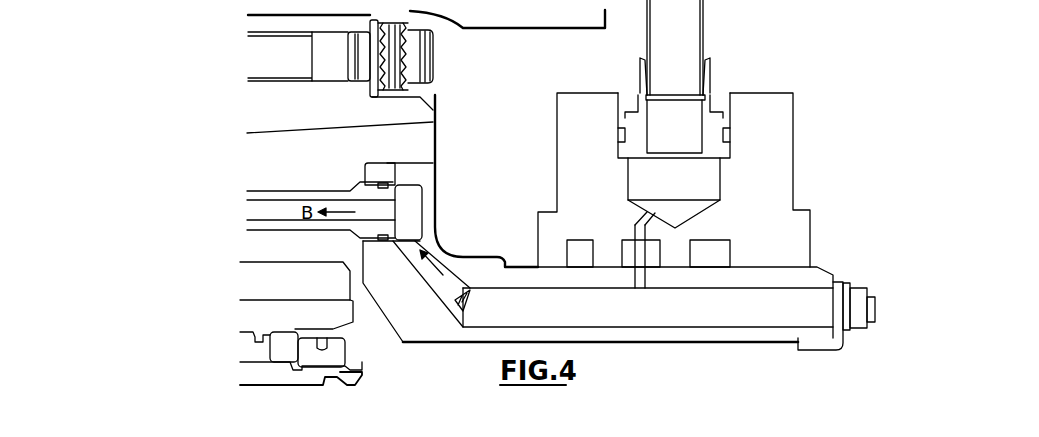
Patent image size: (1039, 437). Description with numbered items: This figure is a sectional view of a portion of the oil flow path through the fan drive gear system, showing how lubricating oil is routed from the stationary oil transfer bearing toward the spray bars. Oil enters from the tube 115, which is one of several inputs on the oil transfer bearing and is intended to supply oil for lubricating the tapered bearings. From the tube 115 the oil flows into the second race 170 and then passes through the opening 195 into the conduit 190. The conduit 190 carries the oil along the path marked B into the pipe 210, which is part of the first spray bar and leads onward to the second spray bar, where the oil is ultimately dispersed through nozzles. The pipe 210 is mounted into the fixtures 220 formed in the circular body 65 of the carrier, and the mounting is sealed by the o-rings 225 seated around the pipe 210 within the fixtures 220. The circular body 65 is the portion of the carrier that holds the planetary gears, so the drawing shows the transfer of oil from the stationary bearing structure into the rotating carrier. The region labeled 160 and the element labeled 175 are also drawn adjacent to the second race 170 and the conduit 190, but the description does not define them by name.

The circular body 65 is at (423, 318).
The tube 115 is at (692, 56).
The housing 160 is at (580, 240).
The second race 170 is at (661, 248).
The block 175 is at (733, 250).
The conduit 190 is at (712, 319).
The opening 195 is at (636, 280).
The pipe 210 is at (263, 191).
The fixtures 220 is at (407, 163).
The o-rings 225 is at (383, 183).